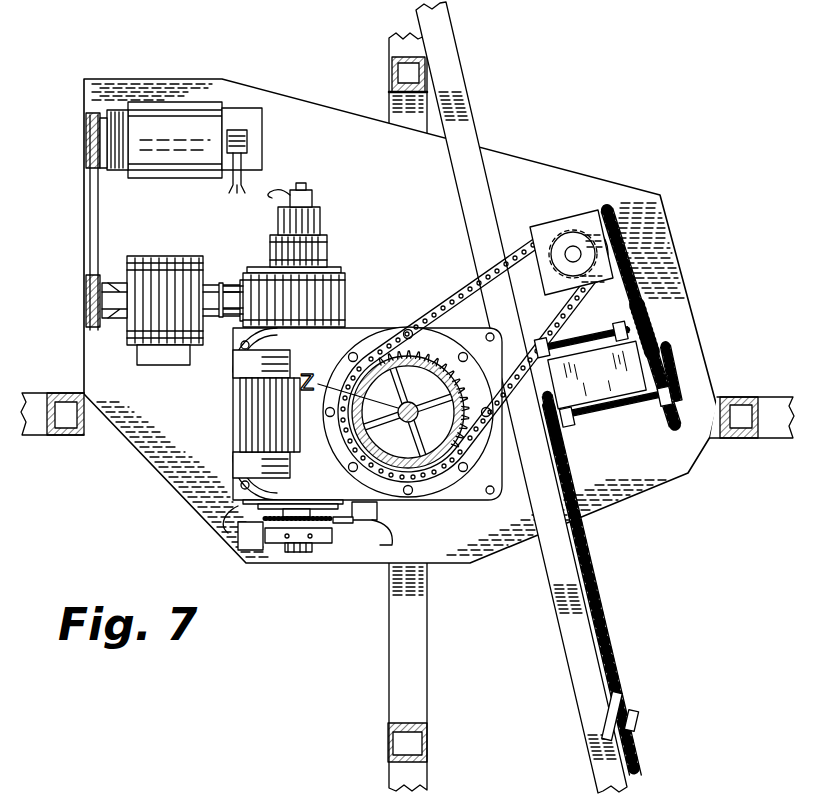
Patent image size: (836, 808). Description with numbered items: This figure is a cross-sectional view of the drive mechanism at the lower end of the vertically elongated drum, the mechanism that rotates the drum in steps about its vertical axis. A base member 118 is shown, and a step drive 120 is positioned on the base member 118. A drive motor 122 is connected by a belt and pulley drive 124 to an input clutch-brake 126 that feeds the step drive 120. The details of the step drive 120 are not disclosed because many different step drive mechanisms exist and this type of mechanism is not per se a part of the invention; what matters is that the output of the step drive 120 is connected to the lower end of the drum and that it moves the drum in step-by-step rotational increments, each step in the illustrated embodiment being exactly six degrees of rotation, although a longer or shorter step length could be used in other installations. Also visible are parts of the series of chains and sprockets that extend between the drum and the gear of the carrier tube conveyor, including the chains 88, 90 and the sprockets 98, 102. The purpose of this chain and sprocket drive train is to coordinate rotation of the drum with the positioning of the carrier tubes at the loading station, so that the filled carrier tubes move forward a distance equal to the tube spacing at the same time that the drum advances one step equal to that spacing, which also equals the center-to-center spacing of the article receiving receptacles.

The chain 88 is at (461, 292).
The chain 90 is at (608, 633).
The sprocket 98 is at (432, 348).
The sprocket 102 is at (558, 447).
The base member 118 is at (466, 543).
The step drive 120 is at (317, 413).
The drive motor 122 is at (176, 162).
The belt and pulley drive 124 is at (96, 208).
The input clutch-brake 126 is at (200, 356).